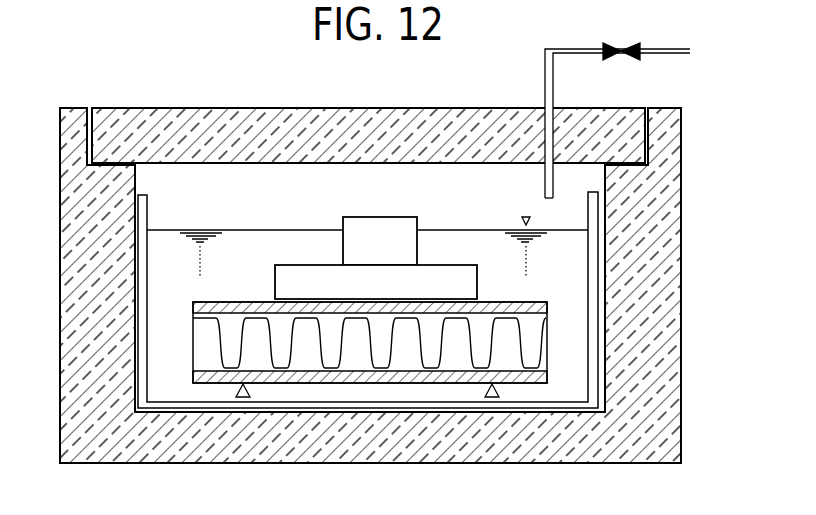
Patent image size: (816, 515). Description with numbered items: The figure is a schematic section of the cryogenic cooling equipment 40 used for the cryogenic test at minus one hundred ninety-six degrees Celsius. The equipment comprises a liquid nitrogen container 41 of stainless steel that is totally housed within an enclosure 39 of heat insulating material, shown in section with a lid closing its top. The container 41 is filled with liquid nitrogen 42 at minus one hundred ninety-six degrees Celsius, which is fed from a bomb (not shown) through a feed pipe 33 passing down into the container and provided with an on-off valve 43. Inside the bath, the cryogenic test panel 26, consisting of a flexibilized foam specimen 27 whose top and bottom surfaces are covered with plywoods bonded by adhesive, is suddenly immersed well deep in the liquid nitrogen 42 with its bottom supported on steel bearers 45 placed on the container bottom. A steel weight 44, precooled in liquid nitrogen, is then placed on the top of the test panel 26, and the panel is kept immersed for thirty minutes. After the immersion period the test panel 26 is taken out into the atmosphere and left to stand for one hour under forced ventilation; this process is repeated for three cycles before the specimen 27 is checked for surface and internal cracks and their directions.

The enclosure 39 is at (681, 250).
The cryogenic cooling equipment 40 is at (204, 105).
The liquid nitrogen container 41 is at (144, 358).
The liquid nitrogen 42 is at (267, 238).
The on-off valve 43 is at (621, 44).
The feed pipe 33 is at (681, 47).
The steel weight 44 is at (410, 242).
The cryogenic test panel 26 is at (246, 301).
The specimen 27 is at (537, 345).
The steel bearers 45 is at (242, 399).